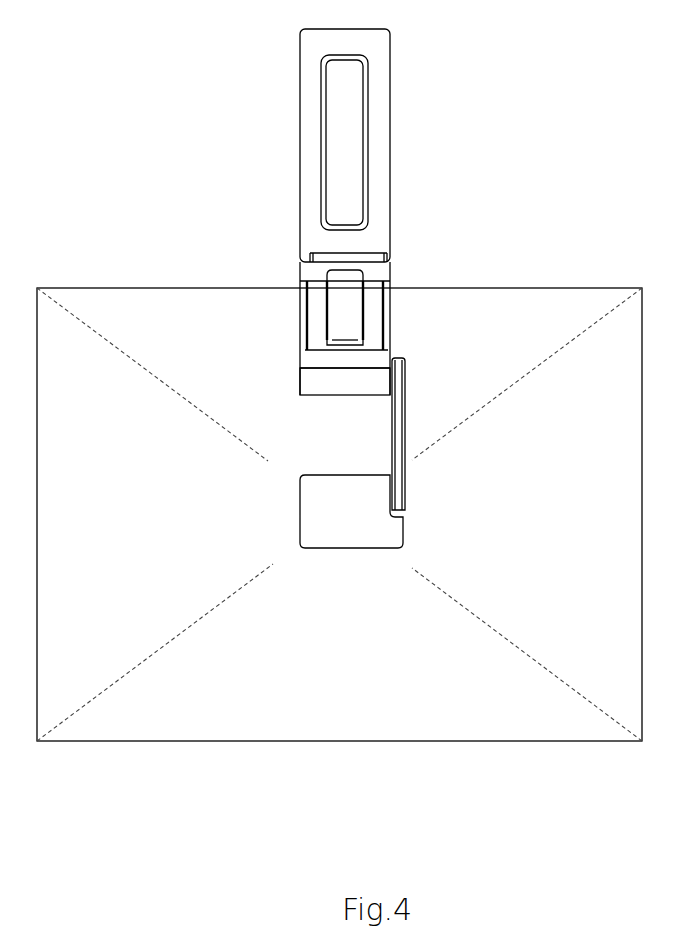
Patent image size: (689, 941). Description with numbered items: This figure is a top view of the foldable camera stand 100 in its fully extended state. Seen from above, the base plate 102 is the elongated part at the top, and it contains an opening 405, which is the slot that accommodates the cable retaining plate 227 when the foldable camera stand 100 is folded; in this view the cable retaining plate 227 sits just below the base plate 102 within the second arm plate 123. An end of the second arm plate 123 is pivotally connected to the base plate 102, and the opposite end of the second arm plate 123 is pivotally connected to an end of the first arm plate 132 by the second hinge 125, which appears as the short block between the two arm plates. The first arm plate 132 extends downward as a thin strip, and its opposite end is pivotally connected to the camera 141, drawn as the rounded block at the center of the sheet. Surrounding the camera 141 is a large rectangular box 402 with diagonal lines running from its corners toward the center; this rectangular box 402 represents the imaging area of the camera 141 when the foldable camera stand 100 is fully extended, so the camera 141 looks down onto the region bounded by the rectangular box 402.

The foldable camera stand 100 is at (485, 124).
The base plate 102 is at (378, 75).
The opening 405 is at (343, 128).
The second arm plate 123 is at (378, 288).
The cable retaining plate 227 is at (340, 311).
The second hinge 125 is at (327, 382).
The first arm plate 132 is at (403, 402).
The camera 141 is at (320, 507).
The rectangular box 402 is at (322, 739).